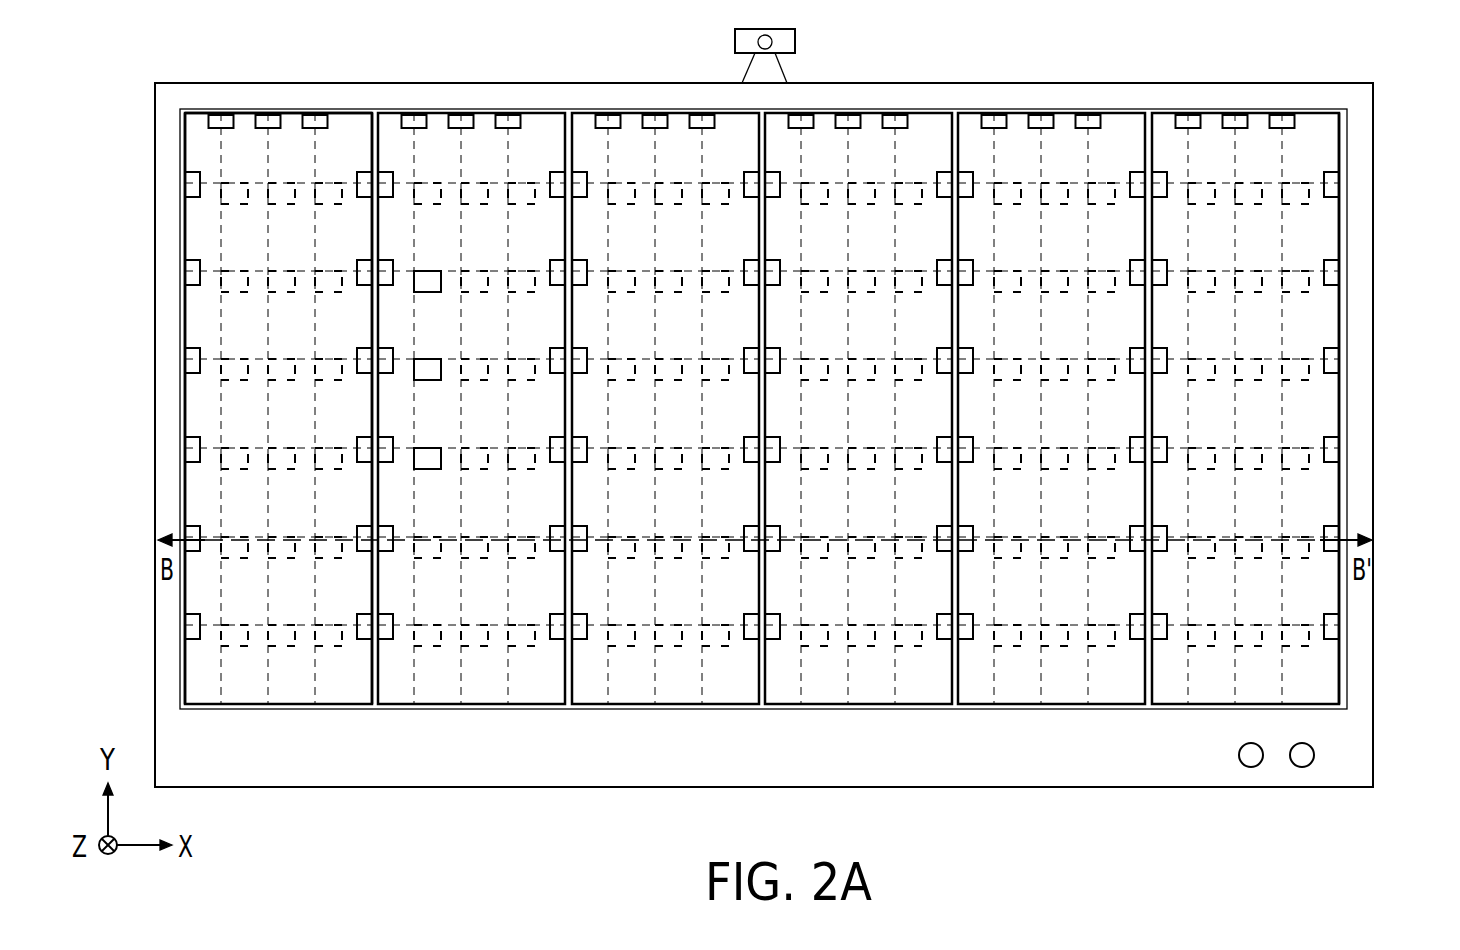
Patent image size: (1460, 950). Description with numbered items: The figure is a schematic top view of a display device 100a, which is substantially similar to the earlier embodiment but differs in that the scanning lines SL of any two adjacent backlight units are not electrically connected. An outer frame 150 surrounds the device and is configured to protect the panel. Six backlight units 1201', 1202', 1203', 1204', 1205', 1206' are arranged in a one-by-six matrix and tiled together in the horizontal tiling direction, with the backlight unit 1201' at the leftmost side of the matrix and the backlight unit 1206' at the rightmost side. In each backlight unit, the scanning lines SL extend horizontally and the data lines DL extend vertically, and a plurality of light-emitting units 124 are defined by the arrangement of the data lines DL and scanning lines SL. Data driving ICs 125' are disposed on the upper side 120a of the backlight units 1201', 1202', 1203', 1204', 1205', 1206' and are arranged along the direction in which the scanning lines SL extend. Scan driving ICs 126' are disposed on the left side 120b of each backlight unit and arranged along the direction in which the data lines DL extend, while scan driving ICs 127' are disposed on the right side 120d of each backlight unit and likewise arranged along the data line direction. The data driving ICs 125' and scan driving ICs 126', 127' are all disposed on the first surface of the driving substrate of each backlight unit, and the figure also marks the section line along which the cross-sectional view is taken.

The display device 100a is at (1400, 843).
The outer frame 150 is at (1190, 776).
The backlight unit 1201' is at (280, 368).
The backlight unit 1202' is at (471, 368).
The backlight unit 1203' is at (665, 368).
The backlight unit 1204' is at (858, 368).
The backlight unit 1205' is at (1051, 368).
The backlight unit 1206' is at (1245, 368).
The upper side 120a is at (240, 114).
The left side 120b is at (185, 228).
The right side 120d is at (1340, 228).
The scanning line SL is at (210, 183).
The data line DL is at (221, 318).
The data driving IC 125' is at (752, 80).
The scan driving IC 126' is at (645, 335).
The scan driving IC 127' is at (898, 335).
The light-emitting unit 124 is at (228, 380).